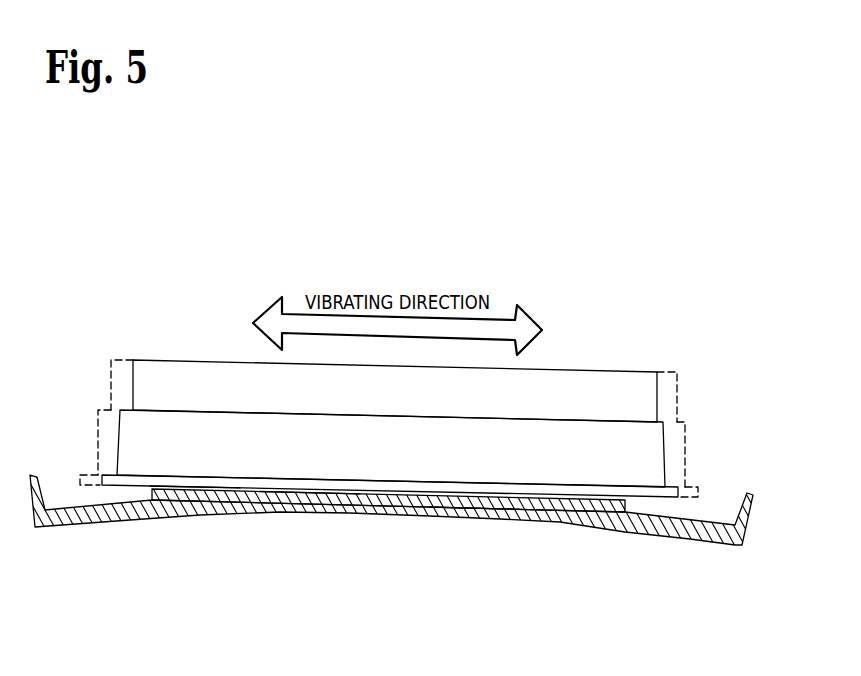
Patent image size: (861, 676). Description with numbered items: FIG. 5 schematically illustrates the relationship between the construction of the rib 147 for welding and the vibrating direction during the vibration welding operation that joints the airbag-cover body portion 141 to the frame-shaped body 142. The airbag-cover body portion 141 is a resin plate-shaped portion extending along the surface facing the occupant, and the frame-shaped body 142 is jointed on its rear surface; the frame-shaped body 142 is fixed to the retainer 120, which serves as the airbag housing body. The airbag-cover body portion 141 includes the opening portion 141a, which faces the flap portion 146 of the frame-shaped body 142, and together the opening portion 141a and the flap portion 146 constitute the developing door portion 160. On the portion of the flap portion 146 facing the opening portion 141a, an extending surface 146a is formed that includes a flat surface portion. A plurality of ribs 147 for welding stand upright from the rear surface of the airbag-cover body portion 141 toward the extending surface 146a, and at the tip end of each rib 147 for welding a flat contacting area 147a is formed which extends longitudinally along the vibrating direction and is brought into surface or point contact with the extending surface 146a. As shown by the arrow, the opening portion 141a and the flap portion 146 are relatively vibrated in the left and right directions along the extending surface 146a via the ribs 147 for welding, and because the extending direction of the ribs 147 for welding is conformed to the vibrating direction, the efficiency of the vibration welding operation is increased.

The retainer 120 is at (659, 390).
The frame-shaped body 142 is at (665, 454).
The rib for welding 147 is at (152, 490).
The contacting area 147a is at (190, 477).
The flap portion 146 is at (388, 487).
The extending surface 146a is at (313, 491).
The airbag-cover body portion 141 is at (614, 529).
The opening portion 141a is at (472, 513).
The developing door portion 160 is at (490, 600).